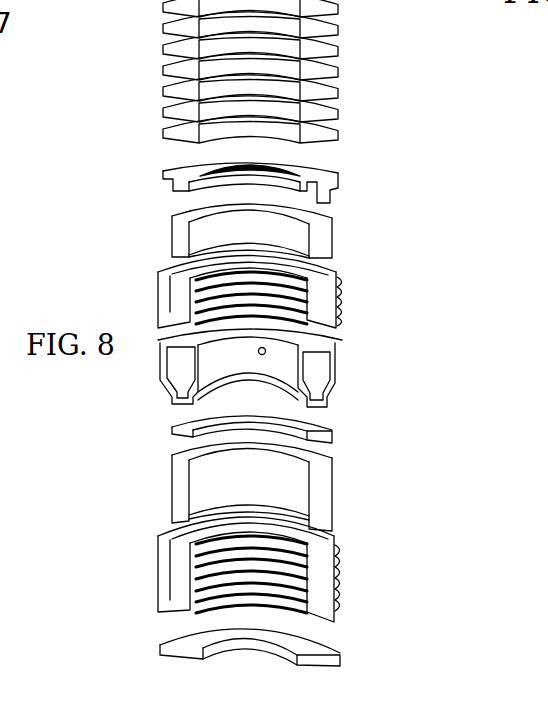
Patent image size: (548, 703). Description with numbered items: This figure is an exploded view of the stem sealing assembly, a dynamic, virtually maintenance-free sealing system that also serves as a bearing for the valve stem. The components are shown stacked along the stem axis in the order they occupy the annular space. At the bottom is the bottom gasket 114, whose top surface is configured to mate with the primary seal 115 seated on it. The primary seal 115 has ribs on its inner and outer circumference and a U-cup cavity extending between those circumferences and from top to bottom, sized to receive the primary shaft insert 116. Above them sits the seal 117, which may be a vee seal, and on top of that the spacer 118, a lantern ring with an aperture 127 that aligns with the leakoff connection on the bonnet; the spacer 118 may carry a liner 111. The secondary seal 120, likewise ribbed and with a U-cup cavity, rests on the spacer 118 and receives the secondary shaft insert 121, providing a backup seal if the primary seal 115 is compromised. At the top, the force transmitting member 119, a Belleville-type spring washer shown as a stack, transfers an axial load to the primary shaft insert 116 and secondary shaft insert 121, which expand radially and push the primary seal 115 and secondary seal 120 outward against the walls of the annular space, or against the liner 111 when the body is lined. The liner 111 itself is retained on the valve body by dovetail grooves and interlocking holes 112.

The liner 111 is at (335, 351).
The interlocking holes 112 is at (320, 190).
The bottom gasket 114 is at (323, 648).
The primary seal 115 is at (332, 579).
The primary shaft insert 116 is at (316, 495).
The seal 117 is at (316, 429).
The spacer 118 is at (316, 375).
The force transmitting member 119 is at (148, 137).
The secondary seal 120 is at (332, 298).
The secondary shaft insert 121 is at (322, 244).
The aperture 127 is at (266, 347).